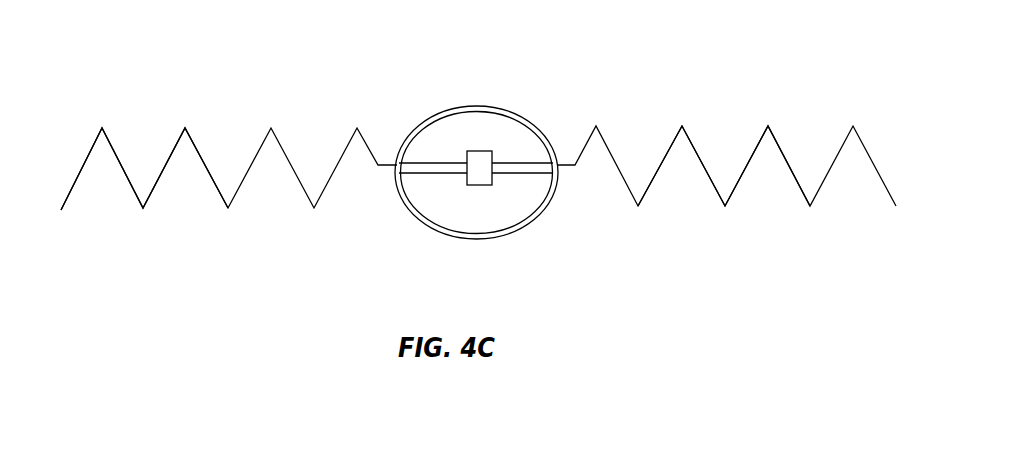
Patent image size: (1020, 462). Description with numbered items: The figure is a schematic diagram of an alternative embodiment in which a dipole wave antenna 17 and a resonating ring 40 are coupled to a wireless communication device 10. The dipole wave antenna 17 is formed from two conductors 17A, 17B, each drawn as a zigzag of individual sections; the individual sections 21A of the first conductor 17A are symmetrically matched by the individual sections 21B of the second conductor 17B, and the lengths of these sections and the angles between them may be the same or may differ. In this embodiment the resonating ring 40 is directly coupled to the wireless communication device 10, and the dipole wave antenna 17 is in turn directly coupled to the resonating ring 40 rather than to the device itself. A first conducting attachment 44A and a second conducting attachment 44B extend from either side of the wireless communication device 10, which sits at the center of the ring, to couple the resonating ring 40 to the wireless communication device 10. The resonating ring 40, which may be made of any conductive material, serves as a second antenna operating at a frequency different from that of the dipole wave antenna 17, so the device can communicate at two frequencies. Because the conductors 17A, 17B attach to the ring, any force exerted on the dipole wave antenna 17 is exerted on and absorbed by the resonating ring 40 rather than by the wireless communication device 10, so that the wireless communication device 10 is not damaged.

The dipole wave antenna 17 is at (672, 90).
The first conductor 17A is at (307, 190).
The second conductor 17B is at (654, 181).
The first conductor section 21A is at (113, 147).
The second conductor section 21B is at (693, 146).
The resonating ring 40 is at (533, 217).
The first conducting attachment 44A is at (443, 168).
The second conducting attachment 44B is at (520, 170).
The wireless communication device 10 is at (477, 151).